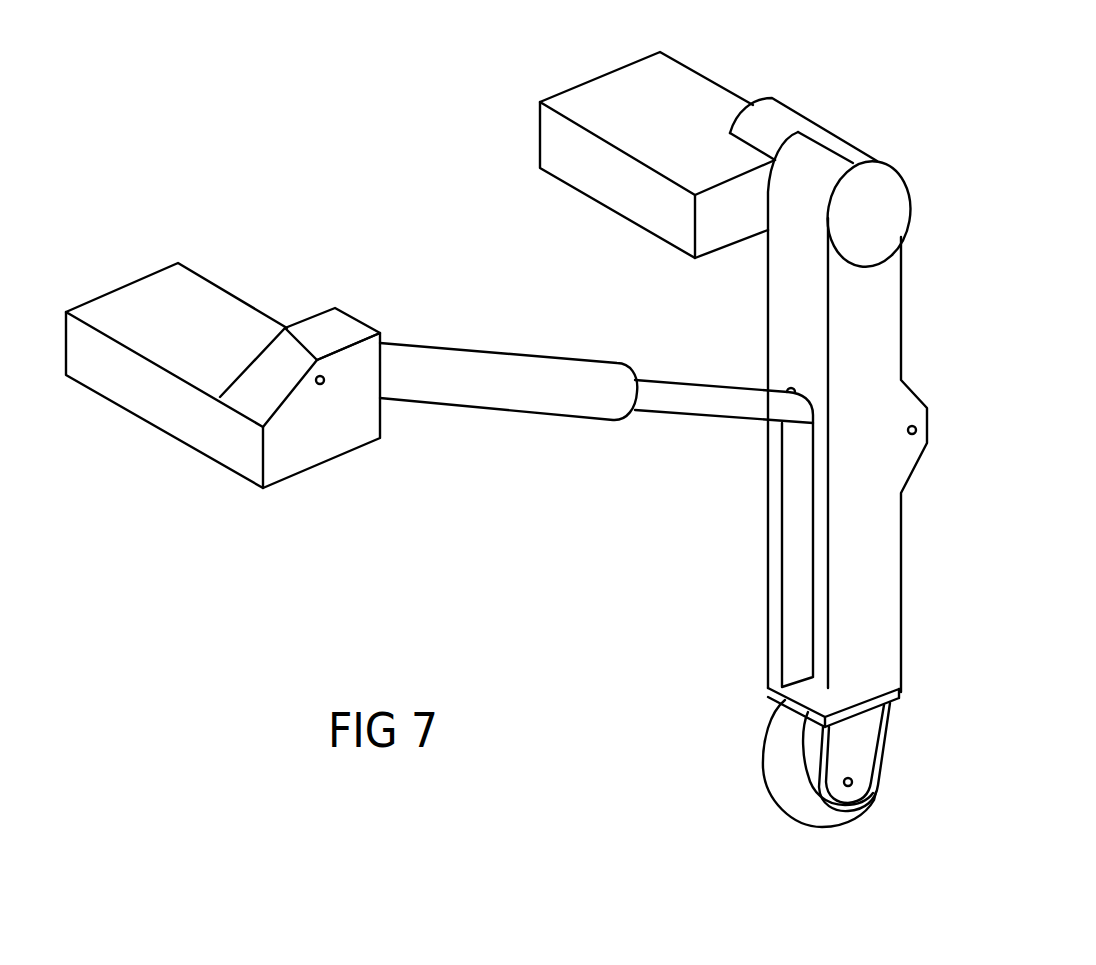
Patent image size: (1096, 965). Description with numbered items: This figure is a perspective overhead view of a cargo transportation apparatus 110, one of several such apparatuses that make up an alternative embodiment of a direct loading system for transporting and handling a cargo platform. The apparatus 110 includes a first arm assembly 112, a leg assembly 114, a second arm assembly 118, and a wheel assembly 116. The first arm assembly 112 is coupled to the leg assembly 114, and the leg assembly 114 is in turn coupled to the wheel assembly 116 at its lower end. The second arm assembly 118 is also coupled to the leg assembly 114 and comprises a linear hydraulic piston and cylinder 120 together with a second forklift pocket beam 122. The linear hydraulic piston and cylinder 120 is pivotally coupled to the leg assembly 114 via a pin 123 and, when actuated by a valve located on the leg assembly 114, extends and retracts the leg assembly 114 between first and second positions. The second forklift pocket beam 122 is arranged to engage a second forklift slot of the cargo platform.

The cargo transportation apparatus 110 is at (378, 88).
The first arm assembly 112 is at (680, 78).
The leg assembly 114 is at (851, 552).
The wheel assembly 116 is at (783, 765).
The second arm assembly 118 is at (423, 285).
The linear hydraulic piston and cylinder 120 is at (525, 380).
The second forklift pocket beam 122 is at (150, 297).
The pin 123 is at (911, 440).